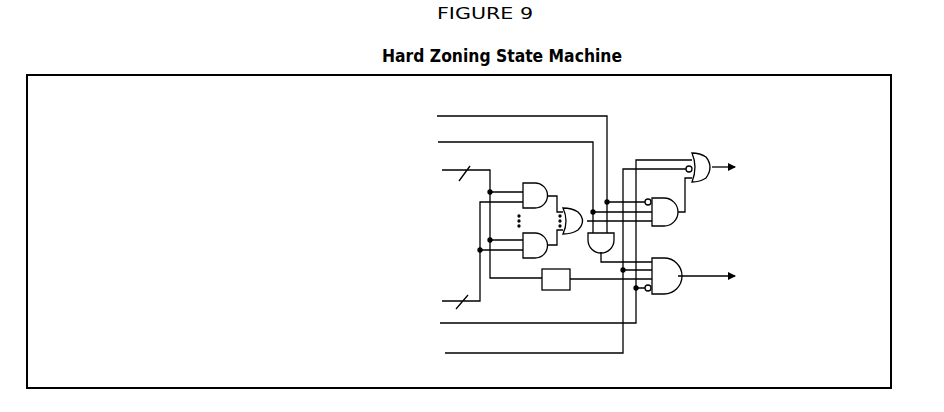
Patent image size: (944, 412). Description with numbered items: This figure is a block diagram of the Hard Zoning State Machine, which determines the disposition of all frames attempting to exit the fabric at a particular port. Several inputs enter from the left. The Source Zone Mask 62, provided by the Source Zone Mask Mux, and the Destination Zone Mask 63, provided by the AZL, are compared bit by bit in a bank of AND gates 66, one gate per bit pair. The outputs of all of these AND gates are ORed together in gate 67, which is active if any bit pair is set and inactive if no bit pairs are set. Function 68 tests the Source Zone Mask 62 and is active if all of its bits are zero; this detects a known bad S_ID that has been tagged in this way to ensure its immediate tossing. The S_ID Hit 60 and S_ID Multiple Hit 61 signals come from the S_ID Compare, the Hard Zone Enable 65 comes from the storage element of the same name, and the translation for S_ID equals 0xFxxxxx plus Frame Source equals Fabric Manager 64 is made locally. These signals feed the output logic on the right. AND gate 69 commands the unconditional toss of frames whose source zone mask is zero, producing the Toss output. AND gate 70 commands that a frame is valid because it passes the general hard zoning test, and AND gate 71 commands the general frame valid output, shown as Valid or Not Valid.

The S_ID Hit 60 is at (362, 144).
The S_ID Multiple Hit 61 is at (296, 112).
The Source Zone Mask 62 is at (278, 171).
The Destination Zone Mask 63 is at (244, 300).
The S_ID=0xFxxxxx+Frame Source=Fabric Manager 64 is at (120, 314).
The Hard Zone Enable 65 is at (300, 354).
The AND gates 66 is at (532, 176).
The OR gate 67 is at (573, 203).
The function 68 is at (540, 290).
The AND gate 69 is at (670, 293).
The AND gate 70 is at (676, 230).
The AND gate 71 is at (707, 145).